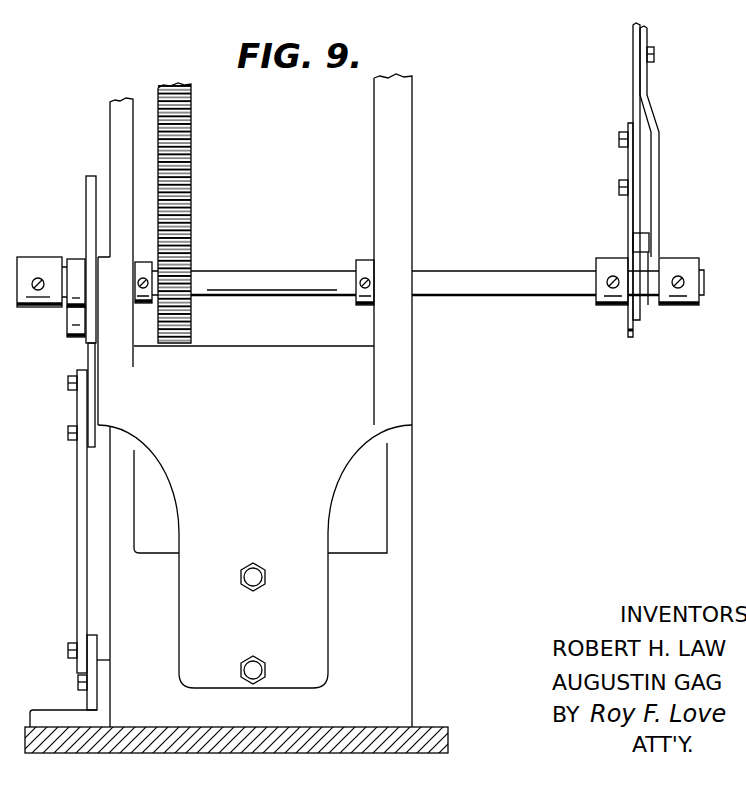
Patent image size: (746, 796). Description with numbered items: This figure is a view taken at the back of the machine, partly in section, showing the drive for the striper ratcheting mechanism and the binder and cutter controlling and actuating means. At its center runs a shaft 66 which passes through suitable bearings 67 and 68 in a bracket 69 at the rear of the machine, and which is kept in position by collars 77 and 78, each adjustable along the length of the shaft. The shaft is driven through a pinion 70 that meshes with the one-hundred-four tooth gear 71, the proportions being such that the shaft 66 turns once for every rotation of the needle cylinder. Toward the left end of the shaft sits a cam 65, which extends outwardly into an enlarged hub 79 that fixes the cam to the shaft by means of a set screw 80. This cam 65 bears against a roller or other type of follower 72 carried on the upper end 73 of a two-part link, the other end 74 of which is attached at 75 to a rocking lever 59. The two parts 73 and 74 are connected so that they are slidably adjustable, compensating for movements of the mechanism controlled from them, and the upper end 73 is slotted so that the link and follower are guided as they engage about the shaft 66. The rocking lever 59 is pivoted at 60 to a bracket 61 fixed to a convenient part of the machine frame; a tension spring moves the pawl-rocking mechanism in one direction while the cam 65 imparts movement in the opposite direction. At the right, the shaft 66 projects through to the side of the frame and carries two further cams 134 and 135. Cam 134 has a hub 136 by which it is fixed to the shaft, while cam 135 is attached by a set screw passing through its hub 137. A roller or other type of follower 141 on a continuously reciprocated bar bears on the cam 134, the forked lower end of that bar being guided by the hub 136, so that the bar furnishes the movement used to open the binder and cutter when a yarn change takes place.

The rocking lever 59 is at (97, 648).
The pivot 60 is at (89, 689).
The bracket 61 is at (58, 713).
The cam 65 is at (77, 262).
The shaft 66 is at (256, 278).
The bearing 67 is at (115, 412).
The bearing 68 is at (393, 400).
The bracket 69 is at (255, 517).
The pinion 70 is at (183, 272).
The gear 71 is at (185, 150).
The follower 72 is at (77, 320).
The upper end of two-part link 73 is at (96, 397).
The other end of two-part link 74 is at (81, 559).
The attachment point 75 is at (76, 652).
The collar 77 is at (143, 262).
The collar 78 is at (363, 262).
The enlarged hub 79 is at (36, 270).
The set screw 80 is at (38, 278).
The cam 134 is at (645, 318).
The cam 135 is at (657, 305).
The hub 136 is at (611, 307).
The hub 137 is at (683, 262).
The follower 141 is at (646, 243).